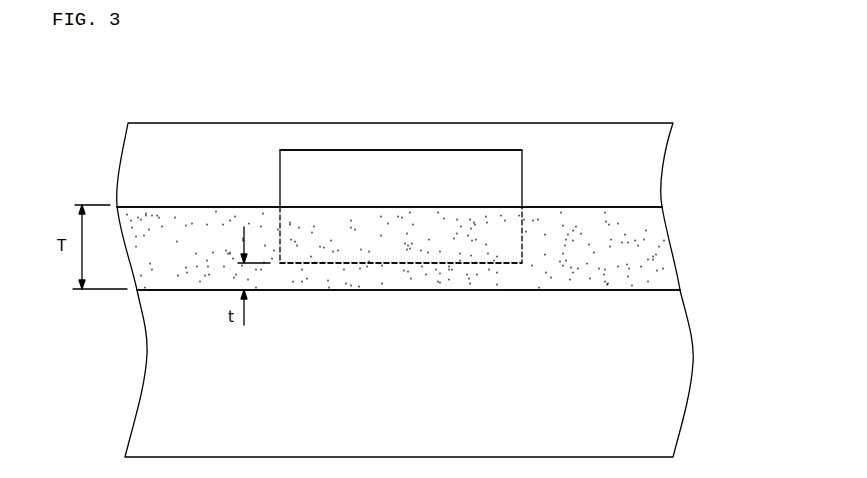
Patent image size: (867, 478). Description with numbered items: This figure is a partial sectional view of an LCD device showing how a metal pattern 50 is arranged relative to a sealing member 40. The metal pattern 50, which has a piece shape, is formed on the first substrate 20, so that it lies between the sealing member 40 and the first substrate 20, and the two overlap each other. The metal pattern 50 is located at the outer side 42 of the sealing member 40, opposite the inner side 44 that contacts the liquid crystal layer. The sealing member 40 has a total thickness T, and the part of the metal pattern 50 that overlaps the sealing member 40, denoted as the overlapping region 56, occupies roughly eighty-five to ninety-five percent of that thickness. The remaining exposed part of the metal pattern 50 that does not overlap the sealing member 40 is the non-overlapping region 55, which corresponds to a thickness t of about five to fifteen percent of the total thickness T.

The first substrate 20 is at (583, 136).
The sealing member 40 is at (652, 246).
The outer side of the sealing member 42 is at (627, 207).
The inner side of the sealing member 44 is at (640, 290).
The metal pattern 50 is at (473, 160).
The non-overlapping region 55 is at (344, 170).
The overlapping region 56 is at (370, 263).